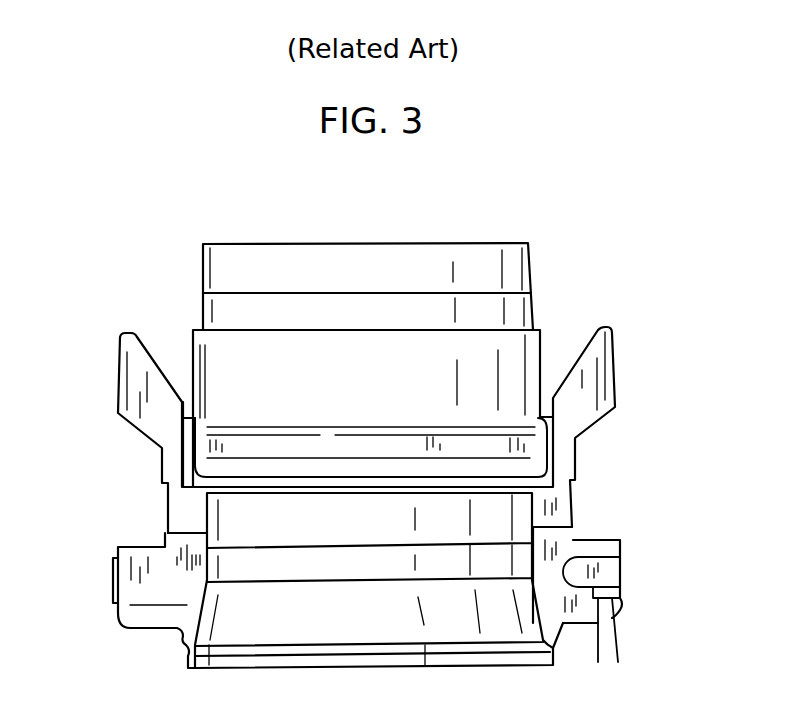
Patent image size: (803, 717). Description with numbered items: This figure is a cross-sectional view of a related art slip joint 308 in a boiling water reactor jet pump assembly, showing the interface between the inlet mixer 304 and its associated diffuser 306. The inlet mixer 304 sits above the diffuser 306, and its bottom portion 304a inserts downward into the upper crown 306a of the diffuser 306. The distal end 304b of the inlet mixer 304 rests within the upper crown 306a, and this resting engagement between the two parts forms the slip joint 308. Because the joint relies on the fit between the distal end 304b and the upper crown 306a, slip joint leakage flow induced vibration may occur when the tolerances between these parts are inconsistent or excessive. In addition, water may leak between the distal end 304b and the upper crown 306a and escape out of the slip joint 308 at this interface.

The inlet mixer 304 is at (533, 258).
The bottom portion 304a is at (541, 348).
The distal end 304b is at (195, 472).
The slip joint 308 is at (555, 452).
The diffuser 306 is at (492, 615).
The upper crown 306a is at (577, 475).